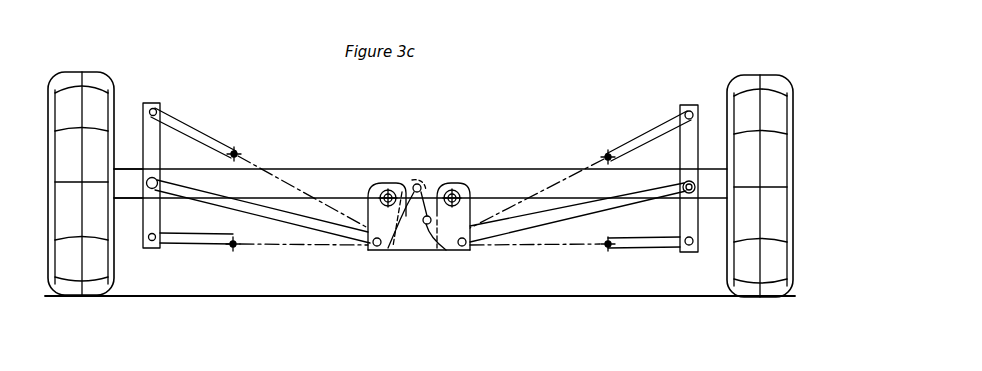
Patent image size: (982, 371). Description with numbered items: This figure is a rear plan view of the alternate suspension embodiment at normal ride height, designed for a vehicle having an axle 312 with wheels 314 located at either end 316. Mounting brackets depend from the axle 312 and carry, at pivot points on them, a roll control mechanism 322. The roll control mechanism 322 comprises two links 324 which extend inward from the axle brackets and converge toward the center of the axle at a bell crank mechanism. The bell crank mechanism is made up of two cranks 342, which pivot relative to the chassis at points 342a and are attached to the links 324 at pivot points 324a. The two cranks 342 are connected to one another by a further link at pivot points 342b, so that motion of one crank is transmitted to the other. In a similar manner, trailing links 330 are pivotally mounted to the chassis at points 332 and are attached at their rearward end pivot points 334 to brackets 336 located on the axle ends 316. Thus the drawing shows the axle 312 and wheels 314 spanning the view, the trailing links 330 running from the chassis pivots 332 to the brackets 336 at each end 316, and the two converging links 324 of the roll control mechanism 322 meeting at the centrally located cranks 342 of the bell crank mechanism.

The axle 312 is at (517, 187).
The wheel 314 is at (97, 80).
The axle end 316 is at (127, 183).
The roll control mechanism 322 is at (318, 334).
The link 324 is at (279, 219).
The pivot point 324a is at (460, 251).
The trailing link 330 is at (193, 135).
The pivot point 332 is at (238, 152).
The rearward end pivot point 334 is at (157, 107).
The bracket 336 is at (690, 146).
The crank 342 is at (383, 182).
The pivot point 342a is at (450, 190).
The pivot point 342b is at (427, 216).